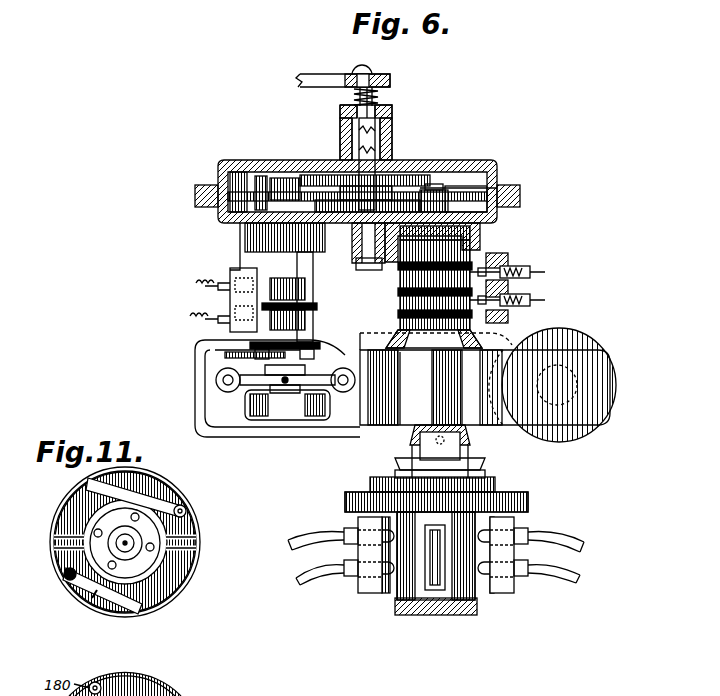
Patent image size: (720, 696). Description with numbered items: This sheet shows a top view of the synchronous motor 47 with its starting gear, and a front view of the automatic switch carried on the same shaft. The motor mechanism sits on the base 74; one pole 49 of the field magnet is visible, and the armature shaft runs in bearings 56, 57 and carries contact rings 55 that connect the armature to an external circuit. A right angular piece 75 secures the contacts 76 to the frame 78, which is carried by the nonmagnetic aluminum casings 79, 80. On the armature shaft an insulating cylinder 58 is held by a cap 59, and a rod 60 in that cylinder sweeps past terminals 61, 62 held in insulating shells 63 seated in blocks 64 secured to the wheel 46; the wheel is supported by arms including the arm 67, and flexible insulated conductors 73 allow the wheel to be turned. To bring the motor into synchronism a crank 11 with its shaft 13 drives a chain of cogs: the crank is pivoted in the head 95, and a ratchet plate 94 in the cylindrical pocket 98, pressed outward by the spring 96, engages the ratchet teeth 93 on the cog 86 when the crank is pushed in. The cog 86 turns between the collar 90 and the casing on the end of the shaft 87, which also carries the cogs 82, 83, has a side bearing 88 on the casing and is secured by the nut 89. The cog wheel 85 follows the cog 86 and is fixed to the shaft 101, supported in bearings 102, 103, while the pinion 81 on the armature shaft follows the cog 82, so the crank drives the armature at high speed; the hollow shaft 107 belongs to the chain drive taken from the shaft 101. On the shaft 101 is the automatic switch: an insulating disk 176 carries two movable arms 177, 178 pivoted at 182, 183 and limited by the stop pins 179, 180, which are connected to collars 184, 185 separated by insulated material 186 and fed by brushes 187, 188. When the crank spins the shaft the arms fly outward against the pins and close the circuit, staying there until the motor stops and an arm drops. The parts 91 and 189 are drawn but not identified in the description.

In FIG. 6, the crank 11 is at (349, 75).
In FIG. 6, the shaft 13 is at (364, 66).
In FIG. 6, the spring 96 is at (374, 70).
In FIG. 6, the ratchet plate 94 is at (381, 99).
In FIG. 6, the head 95 is at (340, 118).
In FIG. 6, the cylindrical pocket 98 is at (340, 140).
In FIG. 6, the ratchet teeth 93 is at (393, 114).
In FIG. 6, the vertical shaft 91 is at (378, 140).
In FIG. 6, the collar 90 is at (352, 162).
In FIG. 6, the cog 83 is at (385, 200).
In FIG. 6, the cog 82 is at (430, 177).
In FIG. 6, the cog 86 is at (460, 176).
In FIG. 6, the shaft 87 is at (240, 172).
In FIG. 6, the cog wheel 85 is at (283, 178).
In FIG. 6, the aluminum casing 80 is at (515, 186).
In FIG. 6, the aluminum casing 79 is at (518, 205).
In FIG. 6, the pinion 81 is at (448, 200).
In FIG. 6, the bearing 56 is at (480, 245).
In FIG. 6, the bearing 102 is at (247, 240).
In FIG. 6, the brush 187 is at (230, 280).
In FIG. 6, the collar 185 is at (305, 284).
In FIG. 6, the brush 188 is at (225, 314).
In FIG. 6, the insulated material 186 is at (317, 305).
In FIG. 6, the collar 184 is at (306, 320).
In FIG. 6, the side bearing 88 is at (380, 263).
In FIG. 6, the nut 89 is at (369, 270).
In FIG. 6, the contact rings 55 is at (400, 300).
In FIG. 6, the right angular piece 75 is at (510, 258).
In FIG. 6, the contacts 76 is at (532, 272).
In FIG. 6, the shaft 101 is at (210, 338).
In FIG. 6, the movable arm 177 is at (252, 368).
In FIG. 11, the movable arm 177 is at (90, 492).
In FIG. 6, the movable arm 178 is at (350, 372).
In FIG. 11, the movable arm 178 is at (170, 585).
In FIG. 6, the base 74 is at (600, 345).
In FIG. 6, the hollow shaft 107 is at (232, 381).
In FIG. 6, the frame 78 is at (614, 386).
In FIG. 6, the synchronous motor 47 is at (510, 379).
In FIG. 6, the bearing 103 is at (258, 418).
In FIG. 6, the pole 49 is at (403, 408).
In FIG. 6, the arm 67 is at (390, 472).
In FIG. 6, the terminal 61 is at (380, 474).
In FIG. 6, the bearing 57 is at (470, 470).
In FIG. 6, the terminal 62 is at (493, 484).
In FIG. 6, the wheel 46 is at (530, 502).
In FIG. 6, the flexible insulated conductors 73 is at (302, 538).
In FIG. 6, the insulating shells 63 is at (350, 578).
In FIG. 6, the blocks 64 is at (365, 596).
In FIG. 6, the rod 60 is at (428, 560).
In FIG. 6, the cap 59 is at (437, 616).
In FIG. 6, the cylinder 58 is at (458, 604).
In FIG. 11, the stop pin 180 is at (165, 490).
In FIG. 11, the pivot 182 is at (187, 511).
In FIG. 11, the hub 189 is at (162, 538).
In FIG. 11, the pivot 183 is at (63, 576).
In FIG. 11, the stop pin 179 is at (92, 600).
In FIG. 11, the insulating disk 176 is at (135, 615).